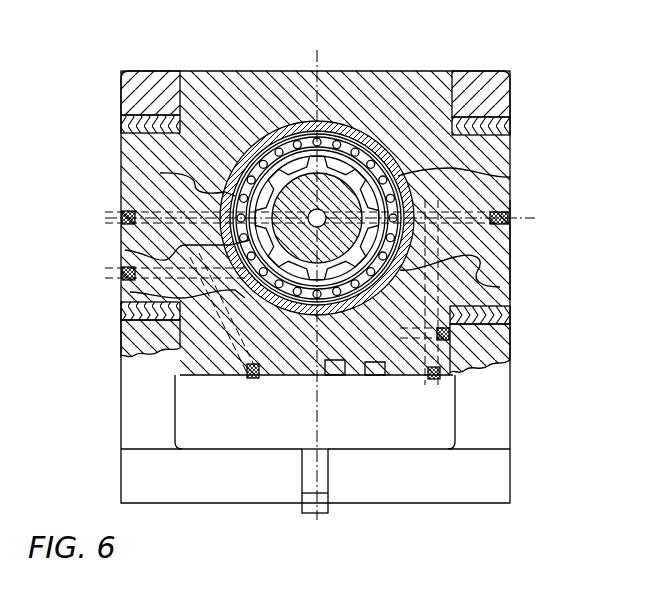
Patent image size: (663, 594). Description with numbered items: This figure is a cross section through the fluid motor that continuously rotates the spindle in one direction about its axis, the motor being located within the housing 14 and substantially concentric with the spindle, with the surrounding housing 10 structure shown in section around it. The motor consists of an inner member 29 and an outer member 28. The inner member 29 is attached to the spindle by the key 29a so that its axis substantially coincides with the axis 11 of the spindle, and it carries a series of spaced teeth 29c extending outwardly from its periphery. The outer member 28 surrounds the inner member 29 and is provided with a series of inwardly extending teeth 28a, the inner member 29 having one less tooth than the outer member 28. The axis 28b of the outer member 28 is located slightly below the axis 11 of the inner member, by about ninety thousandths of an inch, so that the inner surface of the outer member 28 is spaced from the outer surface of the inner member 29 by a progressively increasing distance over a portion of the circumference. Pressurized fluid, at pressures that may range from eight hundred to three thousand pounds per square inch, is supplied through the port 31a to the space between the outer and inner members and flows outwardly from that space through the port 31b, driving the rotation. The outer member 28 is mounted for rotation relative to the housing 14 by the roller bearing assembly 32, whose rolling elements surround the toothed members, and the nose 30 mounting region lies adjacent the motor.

The housing 10 is at (510, 339).
The axis 11 is at (160, 173).
The housing 14 is at (510, 251).
The outer member 28 is at (302, 375).
The inwardly extending teeth 28a is at (500, 287).
The axis of the outer member 28b is at (125, 250).
The inner member 29 is at (335, 370).
The key 29a is at (337, 130).
The teeth 29c is at (130, 292).
The bearing ring 30 is at (510, 177).
The port 31a is at (342, 140).
The port 31b is at (288, 145).
The roller bearing assembly 32 is at (375, 375).